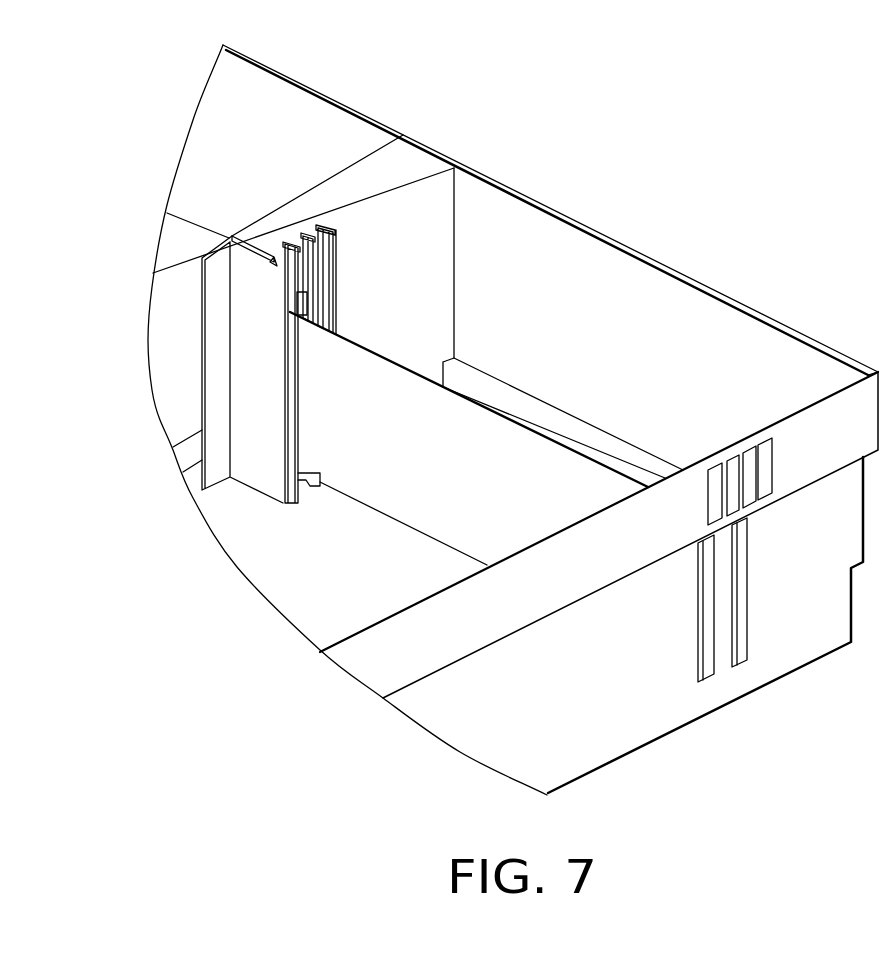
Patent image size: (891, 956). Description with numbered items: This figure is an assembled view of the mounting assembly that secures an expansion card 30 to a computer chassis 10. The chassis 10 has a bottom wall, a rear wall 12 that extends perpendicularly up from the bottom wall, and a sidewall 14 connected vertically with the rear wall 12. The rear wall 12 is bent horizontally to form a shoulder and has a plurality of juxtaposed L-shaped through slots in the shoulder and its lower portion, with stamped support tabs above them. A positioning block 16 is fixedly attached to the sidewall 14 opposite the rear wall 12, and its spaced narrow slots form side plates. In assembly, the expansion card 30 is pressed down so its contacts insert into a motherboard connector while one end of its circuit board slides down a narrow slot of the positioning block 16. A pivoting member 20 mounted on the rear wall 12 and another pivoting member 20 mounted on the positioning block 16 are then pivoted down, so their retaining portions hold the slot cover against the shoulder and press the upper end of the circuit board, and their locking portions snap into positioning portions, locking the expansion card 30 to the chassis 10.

The computer chassis 10 is at (671, 262).
The rear wall 12 is at (672, 700).
The sidewall 14 is at (533, 238).
The positioning block 16 is at (403, 173).
The pivoting member 20 is at (300, 308).
The expansion card 30 is at (400, 485).